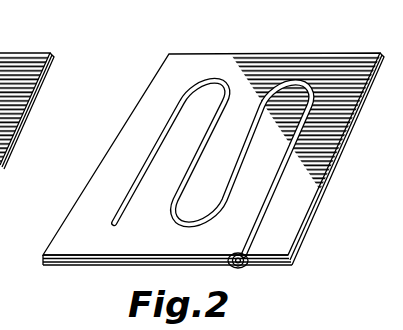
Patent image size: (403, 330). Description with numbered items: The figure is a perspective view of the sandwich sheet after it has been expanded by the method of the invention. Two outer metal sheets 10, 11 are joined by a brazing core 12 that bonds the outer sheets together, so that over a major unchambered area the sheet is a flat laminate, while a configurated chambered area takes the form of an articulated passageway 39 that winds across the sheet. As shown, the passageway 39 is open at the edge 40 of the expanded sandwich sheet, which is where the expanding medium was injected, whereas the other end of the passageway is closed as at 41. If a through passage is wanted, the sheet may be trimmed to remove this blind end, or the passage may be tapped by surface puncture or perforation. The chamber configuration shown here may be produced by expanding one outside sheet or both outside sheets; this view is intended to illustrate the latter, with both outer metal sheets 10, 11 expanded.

The outer metal sheet 10 is at (194, 171).
The outer metal sheet 11 is at (80, 263).
The brazing core 12 is at (42, 258).
The articulated passageway 39 is at (277, 199).
The edge 40 is at (247, 268).
The closed end 41 is at (112, 222).